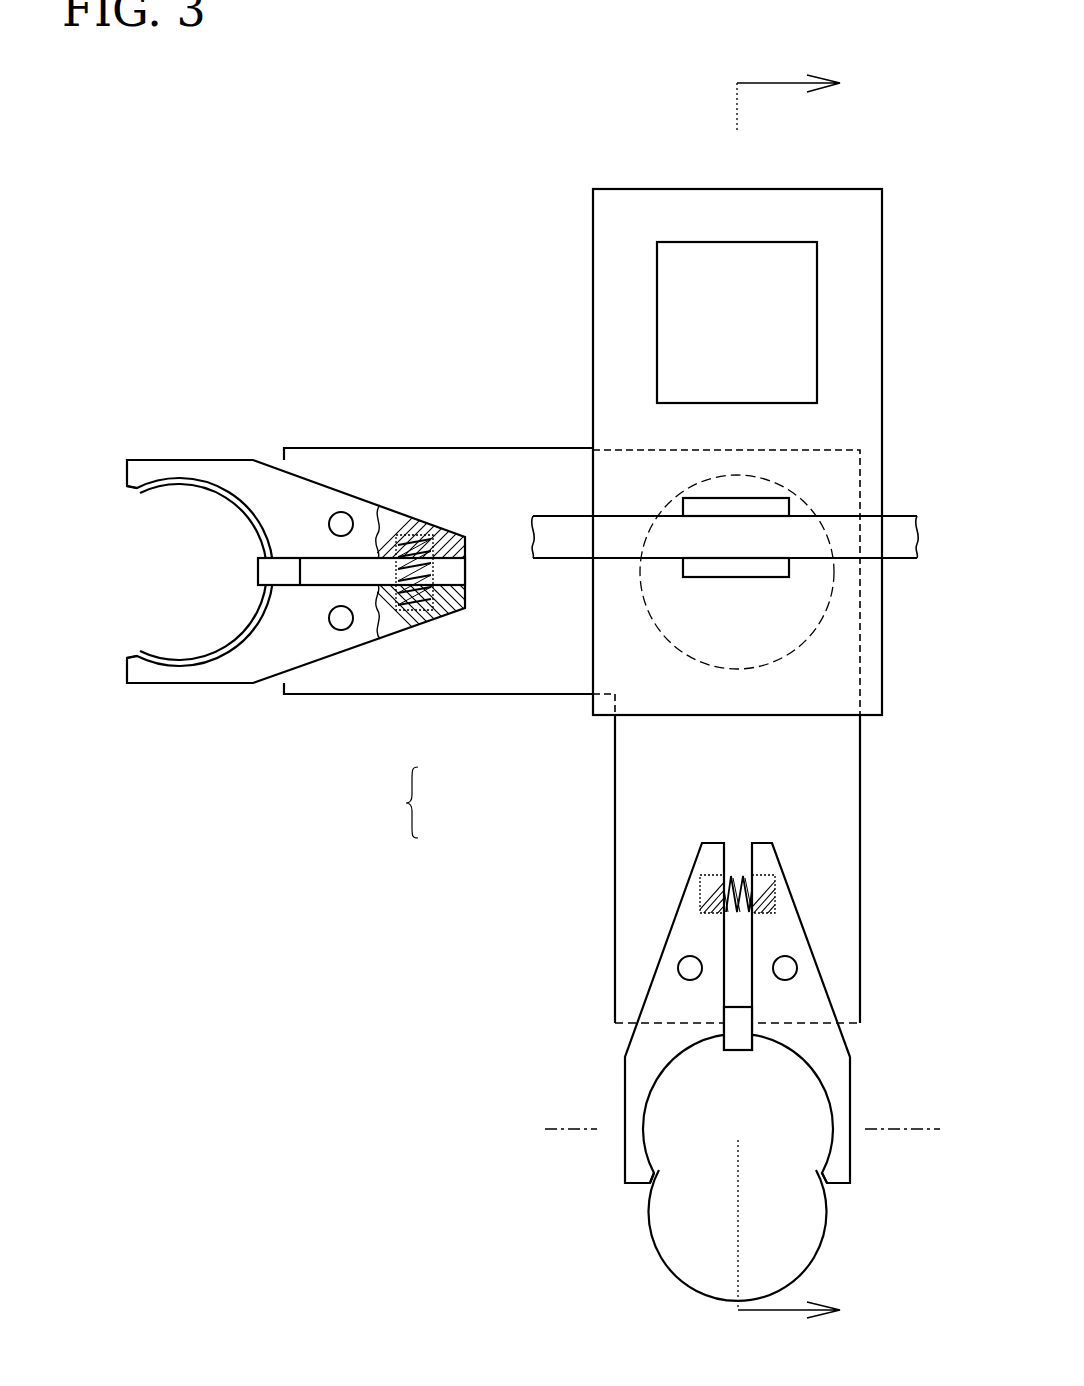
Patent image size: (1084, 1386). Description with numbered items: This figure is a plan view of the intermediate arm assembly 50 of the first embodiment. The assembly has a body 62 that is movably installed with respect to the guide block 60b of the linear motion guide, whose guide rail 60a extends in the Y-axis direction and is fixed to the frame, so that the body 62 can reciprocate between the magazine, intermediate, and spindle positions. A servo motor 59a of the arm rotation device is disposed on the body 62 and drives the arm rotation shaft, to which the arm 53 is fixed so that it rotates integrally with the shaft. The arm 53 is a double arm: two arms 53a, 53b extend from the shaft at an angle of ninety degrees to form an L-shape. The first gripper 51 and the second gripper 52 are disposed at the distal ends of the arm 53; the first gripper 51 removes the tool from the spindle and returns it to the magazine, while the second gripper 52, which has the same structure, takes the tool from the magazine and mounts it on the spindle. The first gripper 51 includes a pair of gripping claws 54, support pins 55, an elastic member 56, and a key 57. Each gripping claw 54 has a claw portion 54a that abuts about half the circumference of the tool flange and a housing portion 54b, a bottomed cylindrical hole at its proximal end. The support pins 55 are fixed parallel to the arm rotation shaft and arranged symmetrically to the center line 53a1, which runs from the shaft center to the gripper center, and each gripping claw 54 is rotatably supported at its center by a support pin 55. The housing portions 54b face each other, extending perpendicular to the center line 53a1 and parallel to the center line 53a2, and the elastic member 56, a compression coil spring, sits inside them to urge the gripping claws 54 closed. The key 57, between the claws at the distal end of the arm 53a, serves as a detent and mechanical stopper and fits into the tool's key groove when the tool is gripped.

The intermediate arm assembly 50 is at (917, 100).
The first gripper 51 is at (597, 1083).
The second gripper 52 is at (215, 418).
The arm 53 is at (572, 735).
The arm 53a is at (614, 830).
The center line 53a1 is at (738, 1253).
The center line 53a2 is at (900, 1129).
The arm 53b is at (455, 694).
The gripping claw 54 is at (188, 690).
The claw portion 54a is at (650, 1125).
The housing portion 54b is at (407, 535).
The support pin 55 is at (338, 511).
The elastic member 56 is at (433, 596).
The key 57 is at (258, 571).
The servo motor 59a is at (657, 303).
The guide rail 60a is at (548, 516).
The guide block 60b is at (735, 578).
The body 62 is at (593, 196).